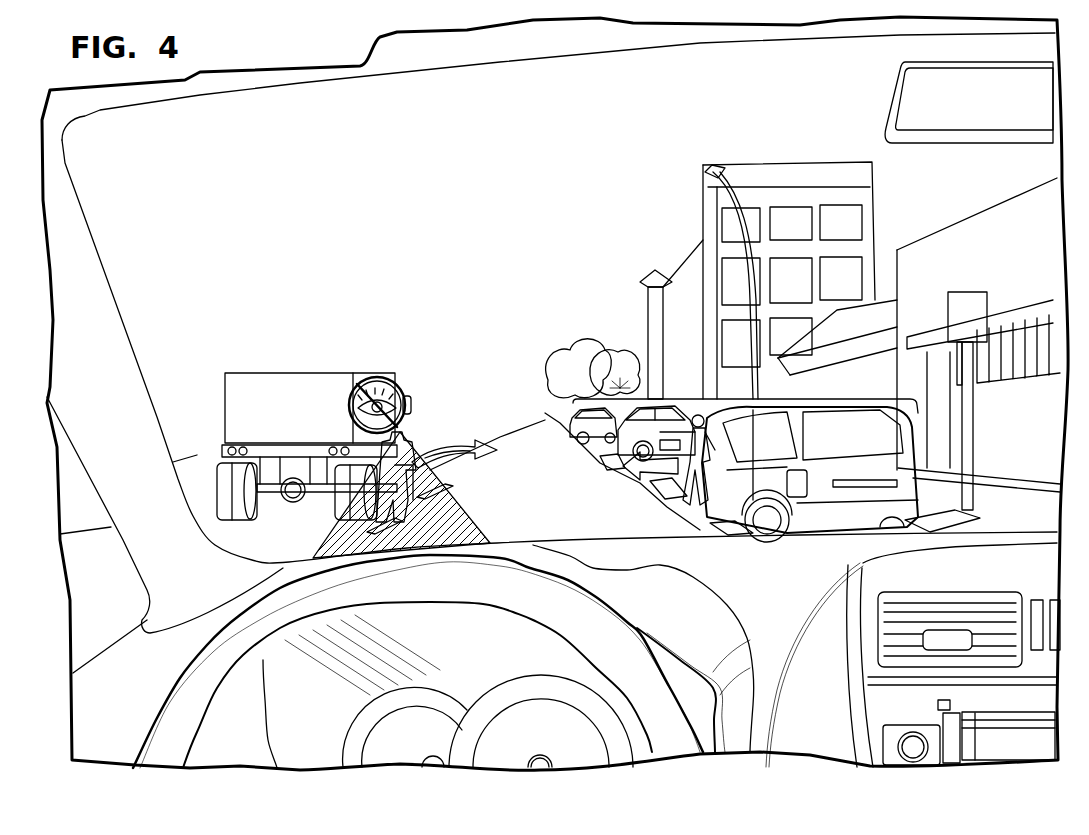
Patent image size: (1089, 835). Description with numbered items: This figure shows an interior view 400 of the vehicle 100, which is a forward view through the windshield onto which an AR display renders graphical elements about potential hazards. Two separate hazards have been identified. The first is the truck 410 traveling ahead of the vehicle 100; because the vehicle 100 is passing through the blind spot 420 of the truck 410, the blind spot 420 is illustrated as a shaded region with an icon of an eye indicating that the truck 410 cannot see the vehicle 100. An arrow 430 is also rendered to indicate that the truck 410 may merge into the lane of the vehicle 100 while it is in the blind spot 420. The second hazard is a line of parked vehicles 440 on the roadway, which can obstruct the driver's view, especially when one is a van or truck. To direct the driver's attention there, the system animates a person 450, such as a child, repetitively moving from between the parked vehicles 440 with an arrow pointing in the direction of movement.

The vehicle 100 is at (812, 703).
The interior view 400 is at (354, 58).
The truck 410 is at (278, 373).
The blind spot 420 is at (483, 523).
The arrow 430 is at (470, 445).
The parked vehicles 440 is at (688, 399).
The person 450 is at (695, 470).